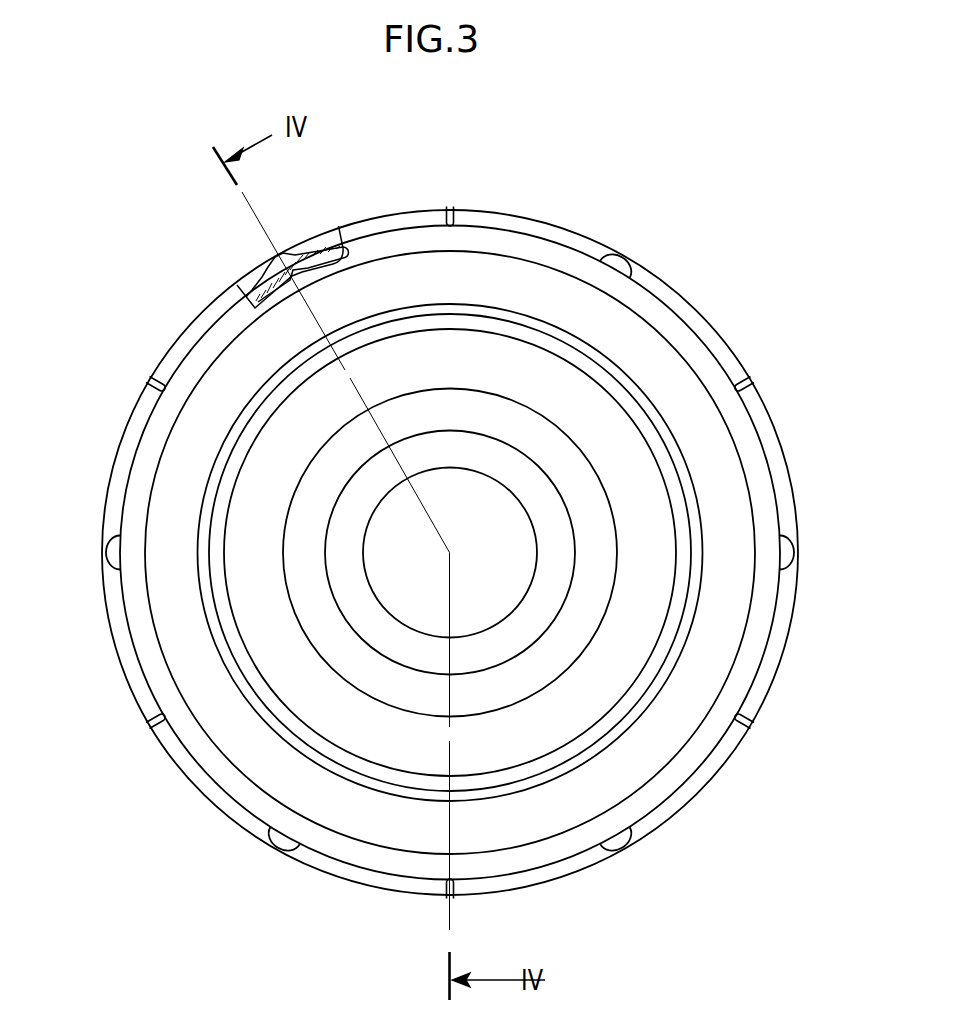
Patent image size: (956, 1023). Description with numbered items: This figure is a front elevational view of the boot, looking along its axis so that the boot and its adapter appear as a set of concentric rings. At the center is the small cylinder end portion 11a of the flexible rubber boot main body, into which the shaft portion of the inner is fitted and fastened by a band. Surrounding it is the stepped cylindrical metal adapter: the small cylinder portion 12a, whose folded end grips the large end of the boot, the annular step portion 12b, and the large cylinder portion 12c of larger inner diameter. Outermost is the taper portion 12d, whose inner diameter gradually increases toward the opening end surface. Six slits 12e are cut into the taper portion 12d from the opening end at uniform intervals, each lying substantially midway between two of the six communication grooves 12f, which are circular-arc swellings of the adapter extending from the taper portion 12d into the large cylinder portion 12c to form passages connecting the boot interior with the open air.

The small cylinder end portion 11a is at (527, 496).
The small cylinder portion 12a is at (377, 843).
The annular step portion 12b is at (218, 768).
The large cylinder portion 12c is at (121, 622).
The taper portion 12d is at (121, 452).
The slits 12e is at (502, 172).
The communication grooves 12f is at (284, 254).